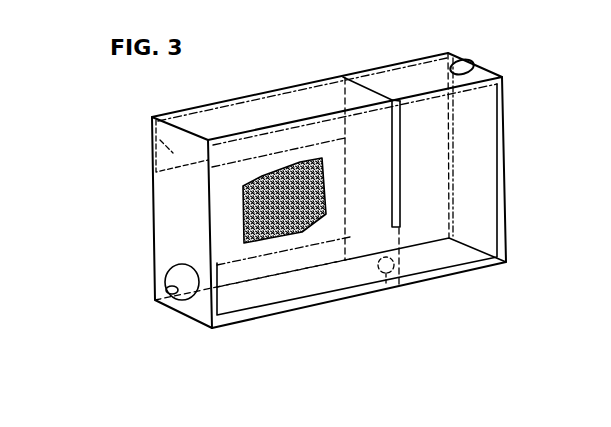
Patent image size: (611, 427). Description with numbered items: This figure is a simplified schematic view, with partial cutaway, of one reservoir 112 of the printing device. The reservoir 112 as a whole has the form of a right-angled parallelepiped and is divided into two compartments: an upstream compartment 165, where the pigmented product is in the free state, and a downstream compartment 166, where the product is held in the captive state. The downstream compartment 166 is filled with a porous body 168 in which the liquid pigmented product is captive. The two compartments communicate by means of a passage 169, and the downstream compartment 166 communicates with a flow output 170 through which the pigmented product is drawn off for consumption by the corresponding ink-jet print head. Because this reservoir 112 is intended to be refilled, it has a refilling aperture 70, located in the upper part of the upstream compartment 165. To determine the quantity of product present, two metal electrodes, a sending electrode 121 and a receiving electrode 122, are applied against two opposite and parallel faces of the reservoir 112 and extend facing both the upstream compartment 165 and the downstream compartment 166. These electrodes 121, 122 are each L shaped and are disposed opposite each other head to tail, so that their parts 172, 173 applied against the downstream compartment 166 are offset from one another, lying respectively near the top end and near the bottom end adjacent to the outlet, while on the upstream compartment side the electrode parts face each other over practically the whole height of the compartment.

The reservoir 112 is at (278, 88).
The sending electrode 121 is at (165, 142).
The receiving electrode 122 is at (254, 292).
The upstream compartment 165 is at (417, 117).
The downstream compartment 166 is at (255, 138).
The porous body 168 is at (250, 221).
The passage 169 is at (382, 277).
The flow output 170 is at (183, 297).
The electrode part 172 is at (168, 211).
The electrode part 173 is at (222, 237).
The refilling aperture 70 is at (474, 60).